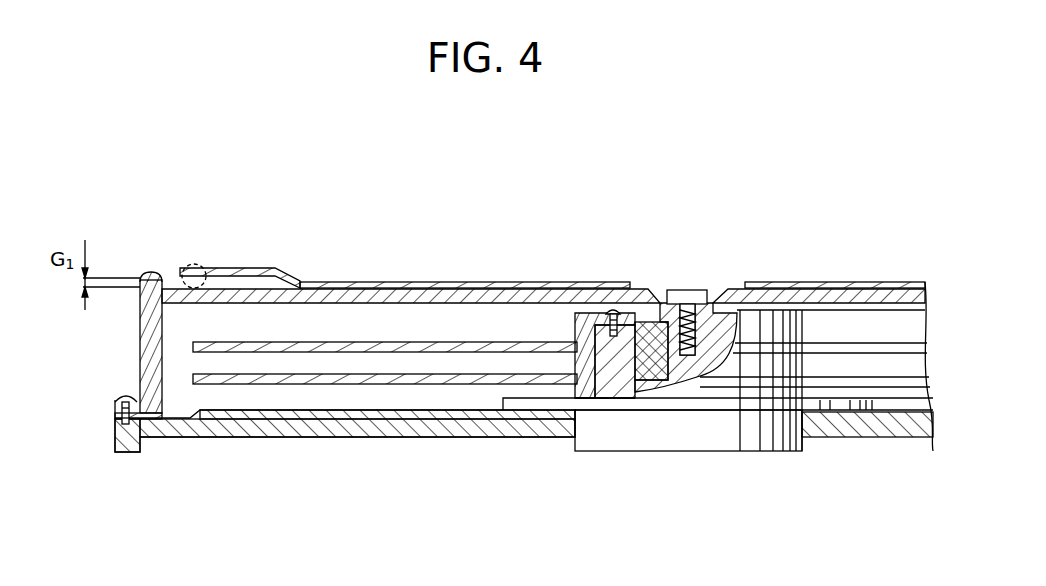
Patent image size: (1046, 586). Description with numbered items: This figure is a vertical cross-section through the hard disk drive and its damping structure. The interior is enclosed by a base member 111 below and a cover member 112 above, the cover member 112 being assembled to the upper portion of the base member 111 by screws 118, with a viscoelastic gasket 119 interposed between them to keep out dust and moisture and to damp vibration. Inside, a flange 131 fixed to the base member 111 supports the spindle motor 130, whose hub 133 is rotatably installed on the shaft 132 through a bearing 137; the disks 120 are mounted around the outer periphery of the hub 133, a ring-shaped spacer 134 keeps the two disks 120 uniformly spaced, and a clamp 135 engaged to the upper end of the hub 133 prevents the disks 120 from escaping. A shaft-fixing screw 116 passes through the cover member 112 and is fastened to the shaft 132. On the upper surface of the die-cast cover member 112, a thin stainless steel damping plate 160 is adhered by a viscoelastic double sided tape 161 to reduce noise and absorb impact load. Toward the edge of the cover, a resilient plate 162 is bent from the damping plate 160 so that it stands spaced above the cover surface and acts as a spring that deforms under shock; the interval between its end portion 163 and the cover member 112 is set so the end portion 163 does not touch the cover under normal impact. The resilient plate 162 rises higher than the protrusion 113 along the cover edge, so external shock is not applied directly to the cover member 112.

The base member 111 is at (115, 436).
The cover member 112 is at (148, 330).
The protrusion 113 is at (150, 272).
The shaft-fixing screw 116 is at (687, 290).
The screws 118 is at (125, 397).
The gasket 119 is at (145, 418).
The disk 120 is at (372, 352).
The spindle motor 130 is at (713, 455).
The flange 131 is at (512, 410).
The shaft 132 is at (720, 305).
The hub 133 is at (618, 398).
The ring-shaped spacer 134 is at (585, 325).
The clamp 135 is at (600, 320).
The bearing 137 is at (651, 322).
The damping plate 160 is at (375, 282).
The double sided tape 161 is at (446, 289).
The resilient plate 162 is at (247, 268).
The end portion 163 is at (196, 264).